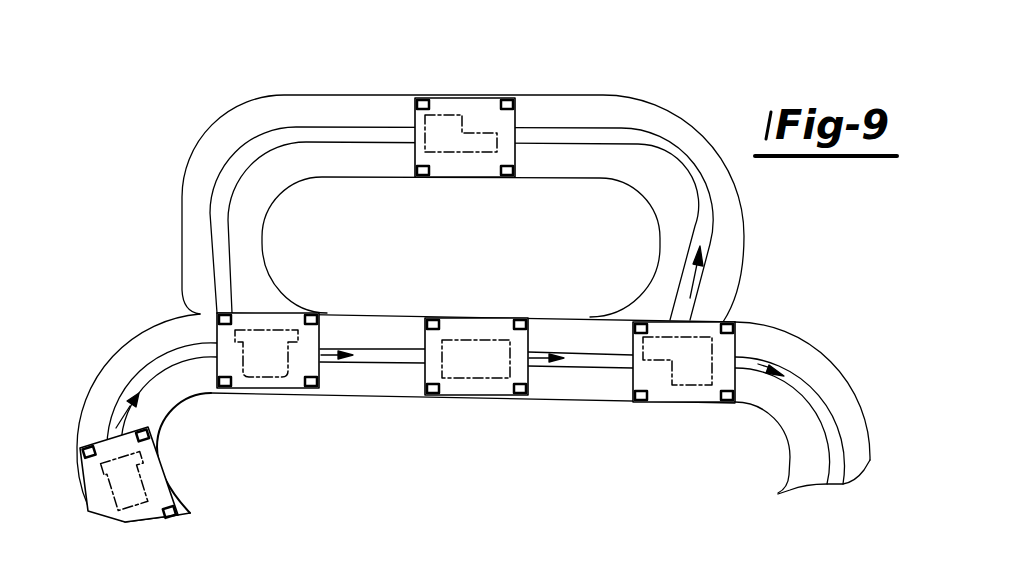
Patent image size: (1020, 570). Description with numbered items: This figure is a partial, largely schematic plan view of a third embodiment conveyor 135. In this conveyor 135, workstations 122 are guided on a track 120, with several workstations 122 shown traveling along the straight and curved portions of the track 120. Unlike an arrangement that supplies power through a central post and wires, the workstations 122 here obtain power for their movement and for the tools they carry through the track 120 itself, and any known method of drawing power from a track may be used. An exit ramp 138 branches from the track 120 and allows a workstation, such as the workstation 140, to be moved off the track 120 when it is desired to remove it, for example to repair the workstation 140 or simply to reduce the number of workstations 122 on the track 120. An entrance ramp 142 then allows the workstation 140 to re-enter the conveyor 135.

The third embodiment conveyor 135 is at (206, 106).
The workstation 140 is at (480, 113).
The entrance ramp 142 is at (188, 239).
The exit ramp 138 is at (730, 266).
The track 120 is at (110, 370).
The workstations 122 is at (283, 315).